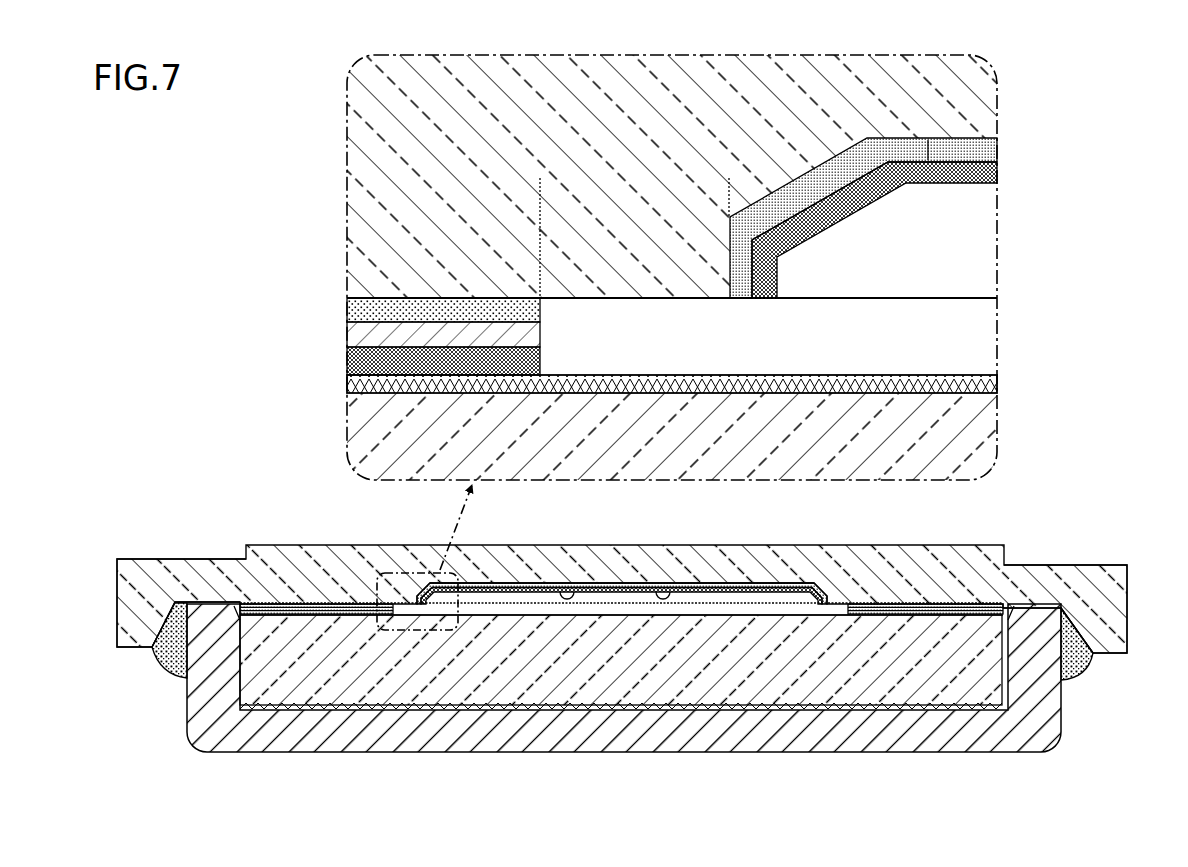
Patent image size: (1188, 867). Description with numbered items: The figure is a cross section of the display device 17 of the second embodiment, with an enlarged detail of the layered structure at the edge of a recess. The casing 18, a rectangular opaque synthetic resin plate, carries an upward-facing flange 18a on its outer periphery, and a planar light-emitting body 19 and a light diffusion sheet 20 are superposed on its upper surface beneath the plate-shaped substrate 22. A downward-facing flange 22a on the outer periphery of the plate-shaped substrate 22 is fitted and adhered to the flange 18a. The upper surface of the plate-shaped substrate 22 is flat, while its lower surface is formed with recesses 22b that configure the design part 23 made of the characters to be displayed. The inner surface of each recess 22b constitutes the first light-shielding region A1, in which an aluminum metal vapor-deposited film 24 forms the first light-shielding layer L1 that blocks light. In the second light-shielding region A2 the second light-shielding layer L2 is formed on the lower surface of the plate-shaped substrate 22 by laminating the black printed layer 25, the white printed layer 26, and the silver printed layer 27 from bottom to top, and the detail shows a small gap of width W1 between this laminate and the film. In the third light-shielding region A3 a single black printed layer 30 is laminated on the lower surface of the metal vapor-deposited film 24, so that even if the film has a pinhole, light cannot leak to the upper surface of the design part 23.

The display device 17 is at (1062, 550).
The casing 18 is at (1062, 734).
The flange 18a is at (217, 662).
The planar light-emitting body 19 is at (985, 426).
The light diffusion sheet 20 is at (997, 385).
The plate-shaped substrate 22 is at (347, 185).
The flange 22a is at (165, 601).
The recess 22b is at (922, 182).
The design part 23 is at (706, 580).
The aluminum metal vapor-deposited film 24 is at (987, 151).
The black printed layer 25 is at (347, 361).
The white printed layer 26 is at (347, 336).
The silver printed layer 27 is at (347, 310).
The black printed layer 30 is at (987, 173).
The first light-shielding layer L1 is at (1046, 136).
The second light-shielding layer L2 is at (276, 303).
The gap width W1 is at (540, 177).
The first light-shielding region A1 is at (625, 775).
The second light-shielding region A2 is at (240, 545).
The third light-shielding region A3 is at (417, 647).